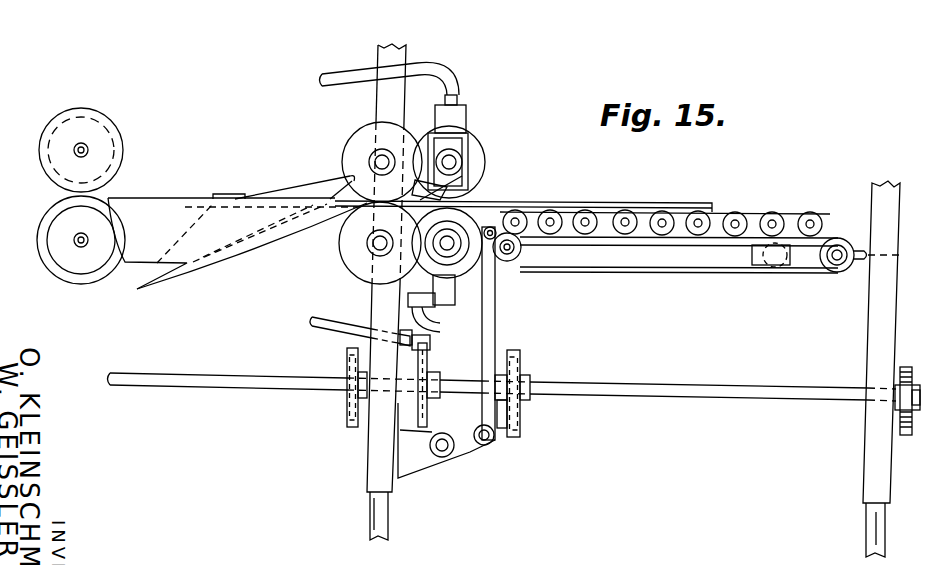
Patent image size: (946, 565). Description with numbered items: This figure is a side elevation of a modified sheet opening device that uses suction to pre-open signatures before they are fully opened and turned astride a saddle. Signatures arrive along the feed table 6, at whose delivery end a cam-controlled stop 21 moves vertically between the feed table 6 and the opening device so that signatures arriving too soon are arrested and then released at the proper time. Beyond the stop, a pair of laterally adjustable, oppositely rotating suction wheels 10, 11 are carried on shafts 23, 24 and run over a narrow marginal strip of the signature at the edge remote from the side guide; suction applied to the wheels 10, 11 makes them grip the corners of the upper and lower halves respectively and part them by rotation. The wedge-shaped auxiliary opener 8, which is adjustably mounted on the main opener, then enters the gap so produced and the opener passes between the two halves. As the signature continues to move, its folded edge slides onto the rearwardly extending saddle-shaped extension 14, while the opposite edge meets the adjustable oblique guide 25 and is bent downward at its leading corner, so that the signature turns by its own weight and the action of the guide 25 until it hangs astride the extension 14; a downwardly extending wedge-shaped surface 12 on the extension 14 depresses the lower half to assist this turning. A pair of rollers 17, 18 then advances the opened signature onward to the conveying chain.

The feed table 6 is at (746, 213).
The auxiliary opener 8 is at (352, 176).
The suction wheel 10 is at (483, 152).
The suction wheel 11 is at (483, 272).
The wedge-shaped surface 12 is at (250, 244).
The saddle-shaped extension 14 is at (168, 199).
The roller 17 is at (112, 150).
The roller 18 is at (88, 264).
The stop 21 is at (470, 197).
The shaft 23 is at (460, 168).
The shaft 24 is at (452, 305).
The oblique guide 25 is at (304, 196).